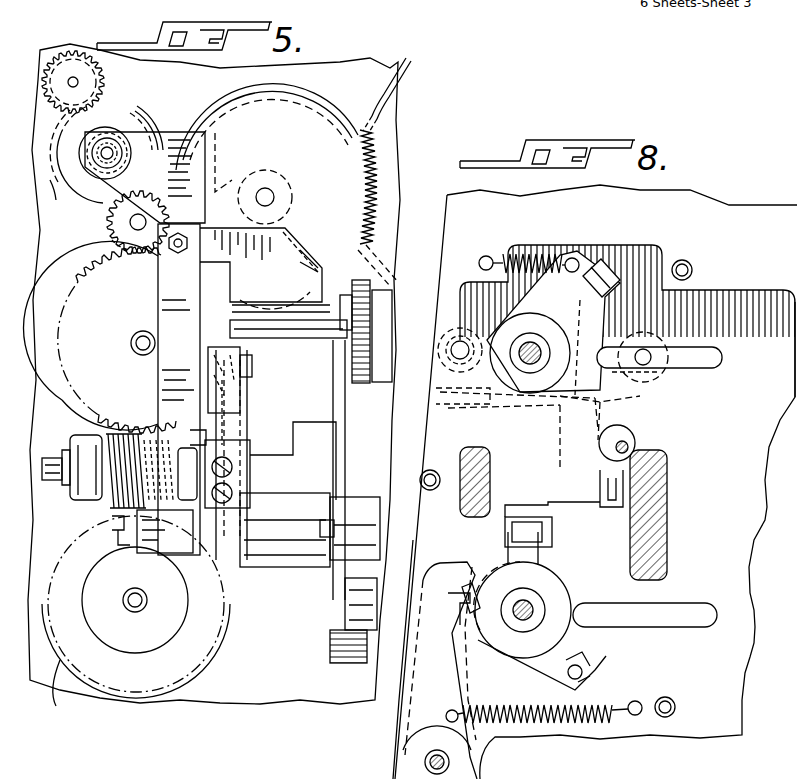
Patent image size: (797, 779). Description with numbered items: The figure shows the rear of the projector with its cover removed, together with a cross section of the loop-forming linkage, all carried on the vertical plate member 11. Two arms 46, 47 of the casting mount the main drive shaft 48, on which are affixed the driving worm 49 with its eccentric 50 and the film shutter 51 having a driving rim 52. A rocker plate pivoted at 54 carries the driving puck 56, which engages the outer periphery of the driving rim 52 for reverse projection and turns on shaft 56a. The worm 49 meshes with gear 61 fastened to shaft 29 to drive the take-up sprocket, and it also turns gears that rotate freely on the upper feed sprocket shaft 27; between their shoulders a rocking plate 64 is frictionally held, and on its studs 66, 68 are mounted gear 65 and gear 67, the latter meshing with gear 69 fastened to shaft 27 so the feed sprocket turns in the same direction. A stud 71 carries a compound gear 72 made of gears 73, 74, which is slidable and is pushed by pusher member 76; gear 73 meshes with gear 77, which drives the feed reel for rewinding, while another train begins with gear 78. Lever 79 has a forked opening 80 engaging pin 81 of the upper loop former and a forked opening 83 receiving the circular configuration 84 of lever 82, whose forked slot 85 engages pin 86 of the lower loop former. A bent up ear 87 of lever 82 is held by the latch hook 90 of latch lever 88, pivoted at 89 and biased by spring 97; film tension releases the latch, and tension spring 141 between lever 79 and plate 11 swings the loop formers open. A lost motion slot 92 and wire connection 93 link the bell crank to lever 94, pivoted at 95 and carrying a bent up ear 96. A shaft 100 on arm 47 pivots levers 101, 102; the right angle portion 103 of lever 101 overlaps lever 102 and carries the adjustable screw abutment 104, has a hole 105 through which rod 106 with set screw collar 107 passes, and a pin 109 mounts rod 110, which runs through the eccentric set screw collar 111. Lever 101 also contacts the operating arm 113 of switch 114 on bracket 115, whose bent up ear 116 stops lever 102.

In FIG. 5, the vertical plate member 11 is at (358, 70).
In FIG. 8, the vertical plate member 11 is at (432, 552).
In FIG. 5, the upper feed sprocket shaft 27 is at (131, 340).
In FIG. 8, the upper feed sprocket shaft 27 is at (538, 348).
In FIG. 5, the shaft 29 is at (133, 612).
In FIG. 8, the shaft 29 is at (535, 612).
In FIG. 5, the arm 46 is at (76, 440).
In FIG. 8, the arm 46 is at (462, 518).
In FIG. 5, the arm 47 is at (278, 428).
In FIG. 8, the arm 47 is at (667, 512).
In FIG. 5, the drive shaft 48 is at (44, 474).
In FIG. 5, the driving worm 49 is at (104, 506).
In FIG. 5, the eccentric 50 is at (244, 420).
In FIG. 5, the film shutter 51 is at (333, 355).
In FIG. 5, the driving rim 52 is at (330, 650).
In FIG. 5, the pivot 54 is at (345, 608).
In FIG. 5, the driving puck 56 is at (360, 290).
In FIG. 5, the shaft 56a is at (262, 332).
In FIG. 5, the gear 61 is at (65, 691).
In FIG. 5, the rocking plate 64 is at (216, 142).
In FIG. 5, the gear 65 is at (304, 118).
In FIG. 5, the stud 66 is at (276, 197).
In FIG. 5, the gear 67 is at (110, 244).
In FIG. 5, the stud 68 is at (130, 222).
In FIG. 5, the gear 69 is at (100, 266).
In FIG. 5, the stud 71 is at (124, 168).
In FIG. 5, the compound gear 72 is at (61, 196).
In FIG. 5, the gear 73 is at (58, 147).
In FIG. 5, the gear 74 is at (130, 110).
In FIG. 5, the pusher member 76 is at (148, 118).
In FIG. 5, the gear 77 is at (107, 92).
In FIG. 5, the gear 78 is at (398, 96).
In FIG. 8, the lever 79 is at (606, 306).
In FIG. 8, the forked opening 80 is at (598, 274).
In FIG. 8, the pin 81 is at (598, 262).
In FIG. 8, the lever 82 is at (556, 590).
In FIG. 8, the forked opening 83 is at (545, 522).
In FIG. 8, the circular configuration 84 is at (545, 540).
In FIG. 8, the forked slot 85 is at (566, 670).
In FIG. 8, the pin 86 is at (582, 678).
In FIG. 8, the bent up ear 87 is at (470, 645).
In FIG. 8, the latch lever 88 is at (410, 700).
In FIG. 8, the pivot 89 is at (428, 758).
In FIG. 8, the latch hook 90 is at (450, 586).
In FIG. 8, the lost motion slot 92 is at (462, 402).
In FIG. 8, the wire connection 93 is at (520, 410).
In FIG. 8, the lever 94 is at (640, 404).
In FIG. 8, the pivot 95 is at (652, 350).
In FIG. 8, the bent up ear 96 is at (615, 508).
In FIG. 8, the spring 97 is at (605, 718).
In FIG. 5, the shaft 100 is at (120, 530).
In FIG. 5, the lever 101 is at (286, 246).
In FIG. 5, the lever 102 is at (160, 295).
In FIG. 5, the right angle portion 103 is at (192, 228).
In FIG. 5, the bar 104 is at (228, 242).
In FIG. 5, the hole 105 is at (312, 306).
In FIG. 5, the rod 106 is at (305, 292).
In FIG. 5, the set screw collar 107 is at (306, 258).
In FIG. 5, the pin 109 is at (253, 368).
In FIG. 5, the rod 110 is at (236, 428).
In FIG. 8, the rod 110 is at (632, 446).
In FIG. 8, the adjustable eccentric set screw collar 111 is at (634, 433).
In FIG. 5, the operating arm 113 is at (212, 358).
In FIG. 5, the switch 114 is at (200, 428).
In FIG. 5, the bracket 115 is at (244, 470).
In FIG. 5, the bent up ear 116 is at (186, 448).
In FIG. 8, the tension spring 141 is at (536, 255).